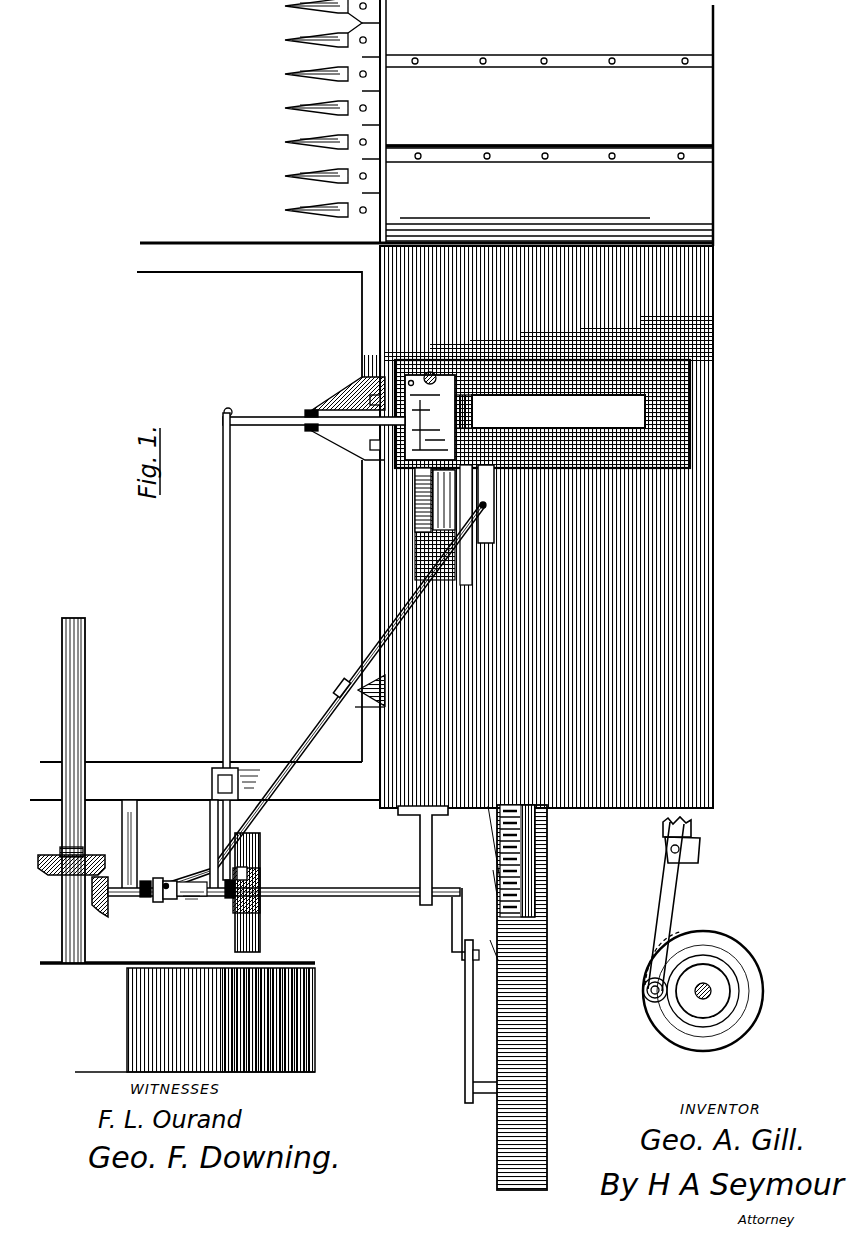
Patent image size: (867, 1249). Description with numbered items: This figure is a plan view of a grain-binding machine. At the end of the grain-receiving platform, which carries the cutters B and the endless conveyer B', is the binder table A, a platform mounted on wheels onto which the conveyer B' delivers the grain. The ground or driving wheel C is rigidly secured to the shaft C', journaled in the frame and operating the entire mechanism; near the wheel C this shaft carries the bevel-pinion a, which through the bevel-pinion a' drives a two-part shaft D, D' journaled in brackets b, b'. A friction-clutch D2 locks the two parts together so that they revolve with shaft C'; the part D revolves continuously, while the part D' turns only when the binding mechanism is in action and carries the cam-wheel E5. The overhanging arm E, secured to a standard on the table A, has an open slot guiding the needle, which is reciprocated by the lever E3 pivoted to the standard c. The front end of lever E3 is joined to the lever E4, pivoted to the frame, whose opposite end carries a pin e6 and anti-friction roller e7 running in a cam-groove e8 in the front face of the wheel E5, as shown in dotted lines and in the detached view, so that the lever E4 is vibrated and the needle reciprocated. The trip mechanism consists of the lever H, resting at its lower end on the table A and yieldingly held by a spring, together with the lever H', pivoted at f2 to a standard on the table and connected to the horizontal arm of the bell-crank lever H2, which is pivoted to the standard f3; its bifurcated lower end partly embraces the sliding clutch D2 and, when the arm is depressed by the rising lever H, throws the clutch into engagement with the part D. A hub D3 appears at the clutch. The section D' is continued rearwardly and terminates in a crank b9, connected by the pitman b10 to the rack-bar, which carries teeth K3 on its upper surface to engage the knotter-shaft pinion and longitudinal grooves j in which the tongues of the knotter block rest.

The cutters B is at (328, 121).
The endless conveyer B' is at (549, 125).
The binder table A is at (538, 527).
The overhanging arm E is at (515, 358).
The lever E3 is at (290, 417).
The lever E4 is at (440, 702).
The cam-wheel E5 is at (735, 935).
The standard c is at (312, 408).
The ground or driving wheel C is at (201, 1020).
The shaft C' is at (161, 790).
The lever H is at (484, 525).
The lever H' is at (324, 697).
The bell-crank lever H2 is at (168, 880).
The pivot f2 is at (342, 680).
The standard f3 is at (160, 878).
The bevel-pinion a is at (66, 853).
The bevel-pinion a' is at (97, 880).
The brackets b is at (136, 845).
The bearing bracket b' is at (197, 845).
The crank b9 is at (452, 905).
The pitman b10 is at (462, 1040).
The shaft part D is at (409, 925).
The shaft part D' is at (383, 855).
The friction-clutch D2 is at (148, 898).
The clutch hub D3 is at (190, 896).
The pin e6 is at (222, 900).
The anti-friction roller e7 is at (248, 874).
The cam-groove e8 is at (692, 1030).
The teeth K3 is at (500, 880).
The longitudinal grooves j is at (535, 855).